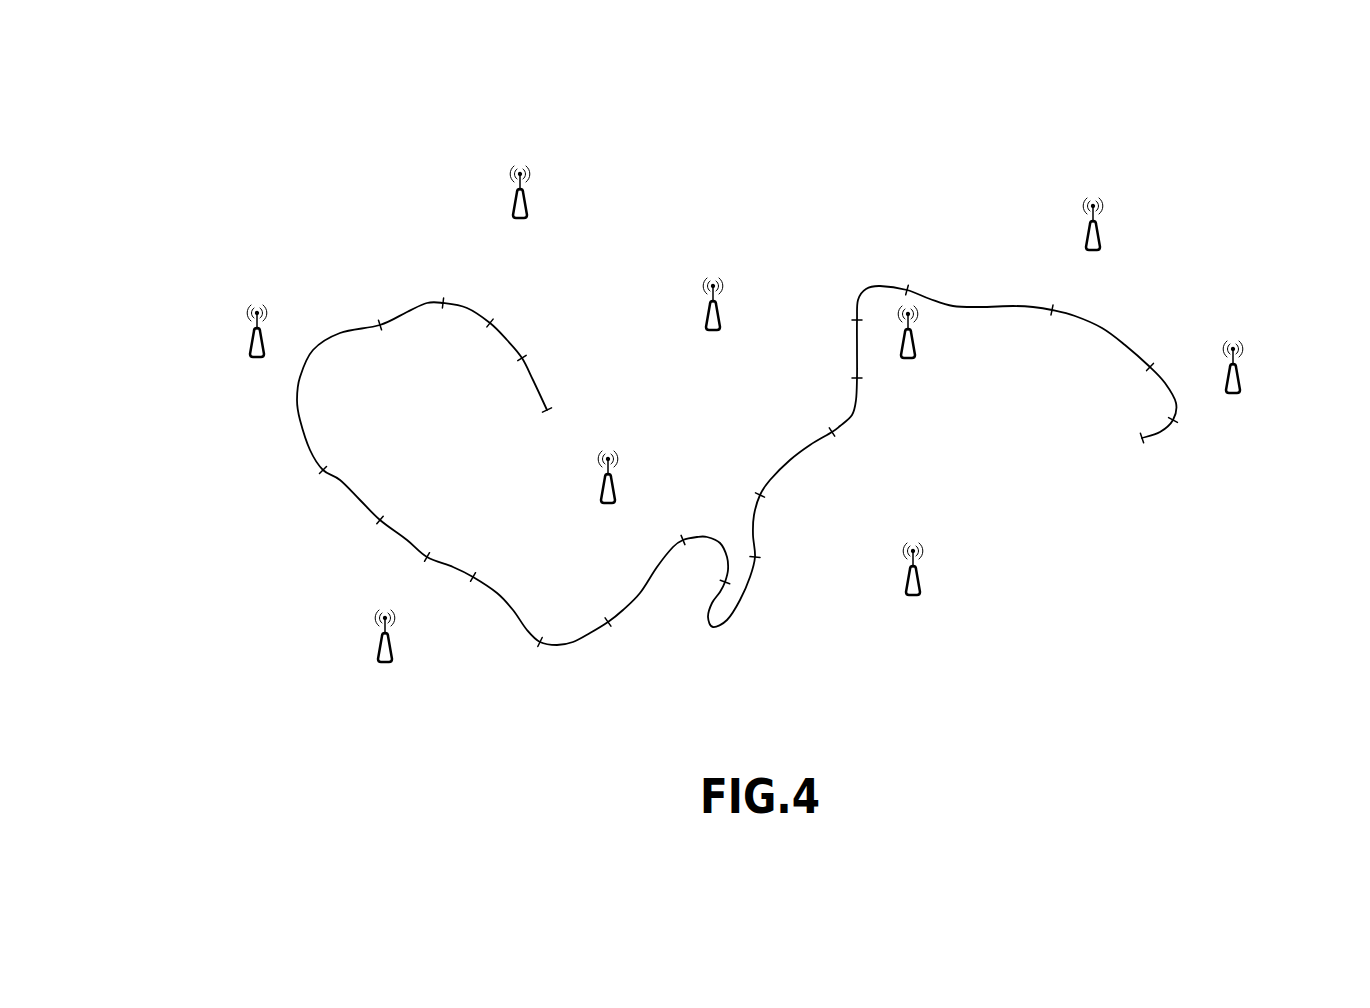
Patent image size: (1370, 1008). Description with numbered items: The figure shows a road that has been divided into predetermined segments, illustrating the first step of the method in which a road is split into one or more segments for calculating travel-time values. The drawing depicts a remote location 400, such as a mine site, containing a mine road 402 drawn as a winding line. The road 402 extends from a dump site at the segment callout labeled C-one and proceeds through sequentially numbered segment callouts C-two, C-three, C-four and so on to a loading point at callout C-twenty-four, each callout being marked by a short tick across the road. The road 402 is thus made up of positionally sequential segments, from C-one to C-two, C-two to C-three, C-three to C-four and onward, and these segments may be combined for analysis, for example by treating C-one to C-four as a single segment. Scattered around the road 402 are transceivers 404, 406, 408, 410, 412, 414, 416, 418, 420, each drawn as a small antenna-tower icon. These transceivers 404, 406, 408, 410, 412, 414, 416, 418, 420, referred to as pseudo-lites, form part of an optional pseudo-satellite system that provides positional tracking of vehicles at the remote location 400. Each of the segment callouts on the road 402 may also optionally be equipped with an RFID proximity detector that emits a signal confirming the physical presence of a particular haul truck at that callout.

The remote location 400 is at (1218, 132).
The mine road 402 is at (1102, 328).
The transceiver 404 is at (528, 198).
The transceiver 406 is at (251, 333).
The transceiver 408 is at (379, 636).
The transceiver 410 is at (602, 488).
The transceiver 412 is at (707, 306).
The transceiver 414 is at (920, 577).
The transceiver 416 is at (1100, 226).
The transceiver 418 is at (916, 340).
The transceiver 420 is at (1242, 375).